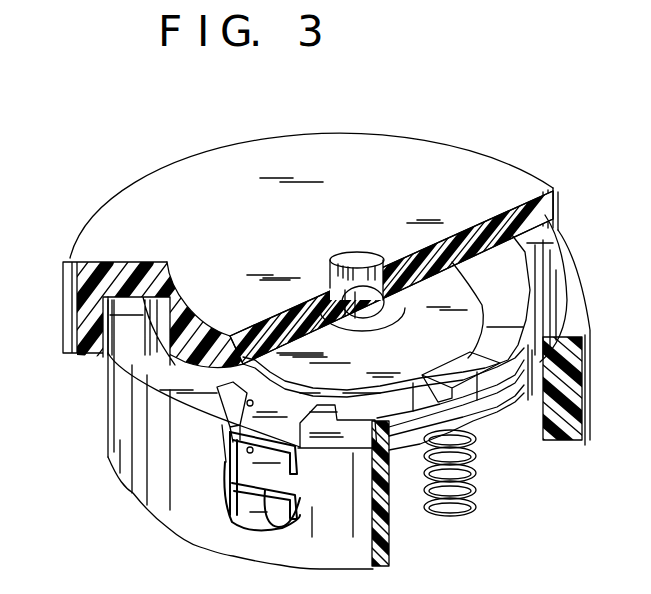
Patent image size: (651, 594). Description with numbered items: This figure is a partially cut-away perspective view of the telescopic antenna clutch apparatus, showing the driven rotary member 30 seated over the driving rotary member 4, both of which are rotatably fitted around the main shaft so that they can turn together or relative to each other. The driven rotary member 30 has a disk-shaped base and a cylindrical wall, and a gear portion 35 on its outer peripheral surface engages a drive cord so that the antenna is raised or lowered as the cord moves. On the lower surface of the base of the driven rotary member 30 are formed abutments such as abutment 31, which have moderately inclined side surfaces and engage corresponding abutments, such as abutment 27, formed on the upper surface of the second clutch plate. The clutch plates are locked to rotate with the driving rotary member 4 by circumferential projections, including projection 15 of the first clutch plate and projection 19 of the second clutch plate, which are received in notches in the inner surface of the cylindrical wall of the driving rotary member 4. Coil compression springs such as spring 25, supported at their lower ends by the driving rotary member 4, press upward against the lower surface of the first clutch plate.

The driven rotary member 30 is at (128, 192).
The abutment 31 is at (187, 320).
The gear portion 35 is at (63, 312).
The driving rotary member 4 is at (578, 280).
The abutment 27 is at (443, 372).
The projection 19 is at (222, 422).
The projection 15 is at (292, 524).
The coil compression spring 25 is at (480, 467).